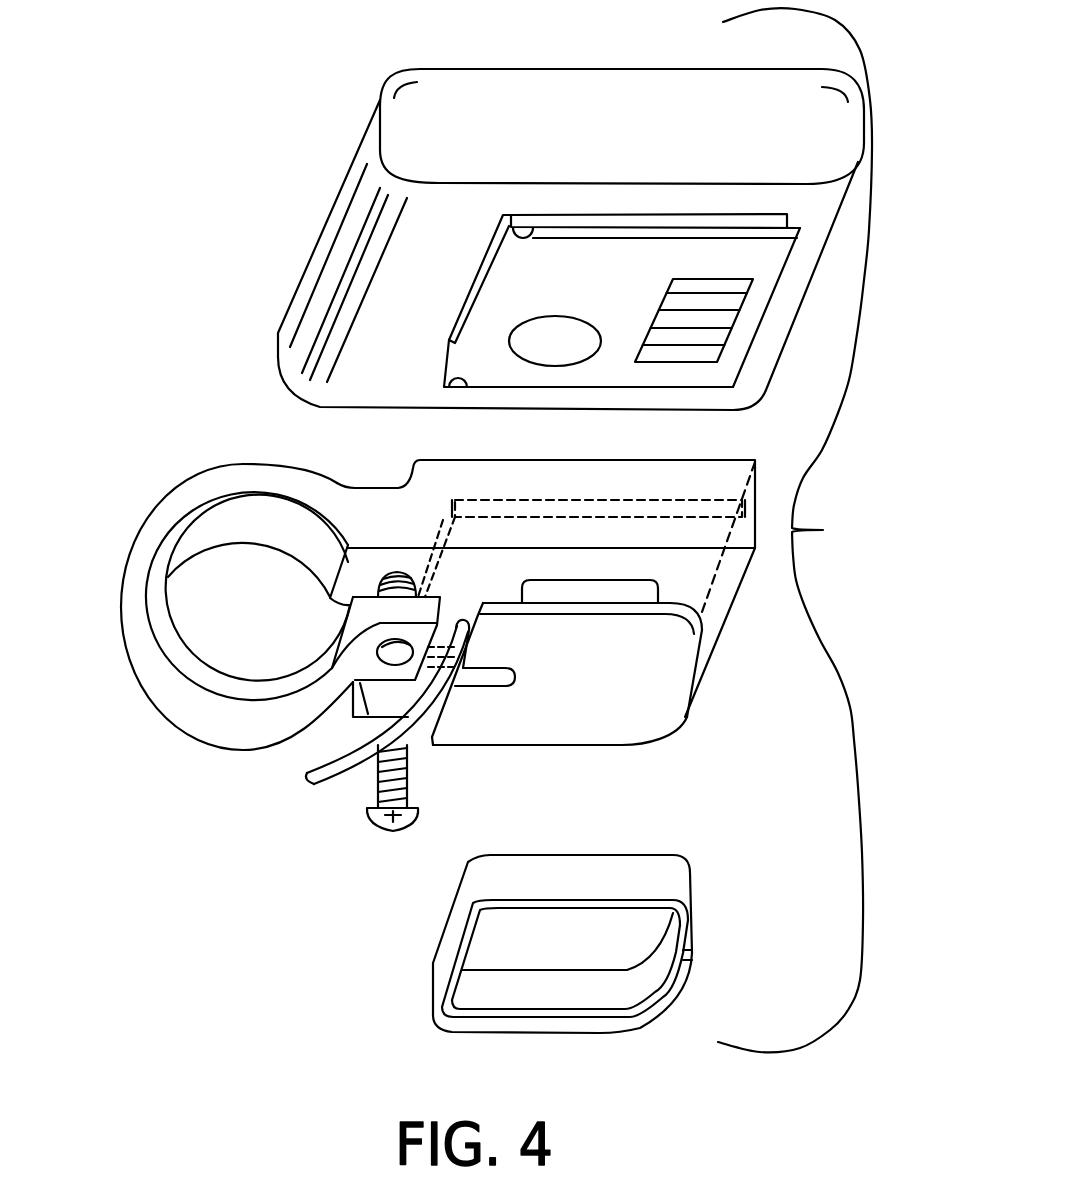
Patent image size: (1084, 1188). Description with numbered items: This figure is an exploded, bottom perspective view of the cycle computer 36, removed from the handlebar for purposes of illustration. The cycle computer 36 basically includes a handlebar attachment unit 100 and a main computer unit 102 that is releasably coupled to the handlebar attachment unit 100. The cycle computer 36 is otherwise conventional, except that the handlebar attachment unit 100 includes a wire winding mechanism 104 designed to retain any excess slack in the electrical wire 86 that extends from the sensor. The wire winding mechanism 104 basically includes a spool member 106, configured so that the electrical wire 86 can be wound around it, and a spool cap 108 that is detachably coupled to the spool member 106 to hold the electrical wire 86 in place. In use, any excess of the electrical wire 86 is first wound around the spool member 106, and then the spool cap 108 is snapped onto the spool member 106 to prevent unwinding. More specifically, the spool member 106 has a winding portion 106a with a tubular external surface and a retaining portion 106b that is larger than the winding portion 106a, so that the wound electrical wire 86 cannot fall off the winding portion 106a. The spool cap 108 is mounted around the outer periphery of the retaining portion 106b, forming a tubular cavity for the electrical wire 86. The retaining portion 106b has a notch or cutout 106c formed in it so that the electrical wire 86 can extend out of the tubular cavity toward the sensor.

The cycle computer 36 is at (823, 530).
The electrical wire 86 is at (312, 778).
The handlebar attachment unit 100 is at (176, 452).
The main computer unit 102 is at (328, 132).
The wire winding mechanism 104 is at (683, 830).
The spool member 106 is at (623, 697).
The winding portion 106a is at (642, 590).
The retaining portion 106b is at (663, 707).
The notch or cutout 106c is at (488, 684).
The spool cap 108 is at (633, 838).